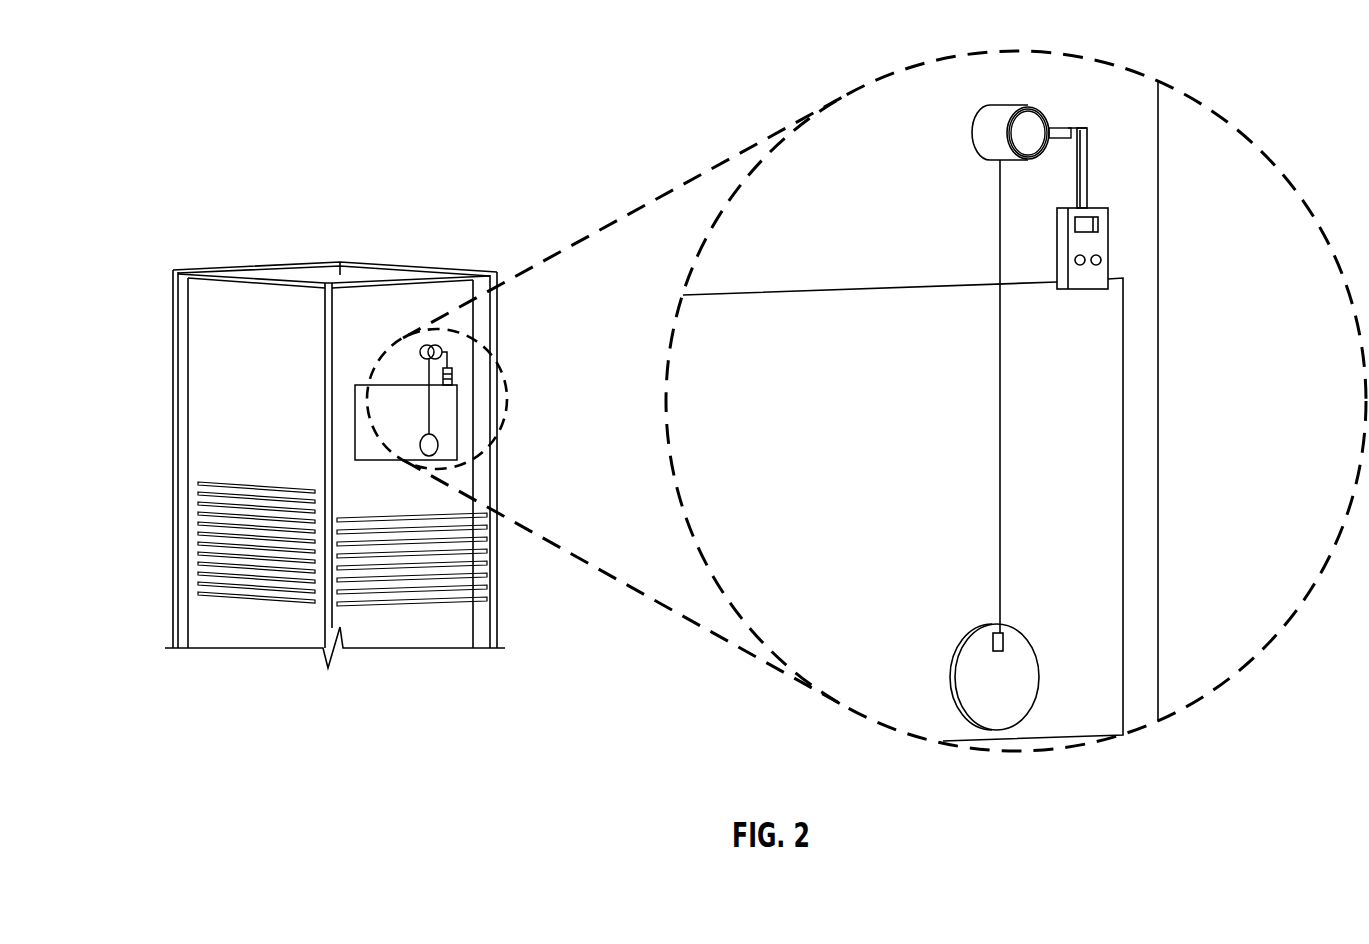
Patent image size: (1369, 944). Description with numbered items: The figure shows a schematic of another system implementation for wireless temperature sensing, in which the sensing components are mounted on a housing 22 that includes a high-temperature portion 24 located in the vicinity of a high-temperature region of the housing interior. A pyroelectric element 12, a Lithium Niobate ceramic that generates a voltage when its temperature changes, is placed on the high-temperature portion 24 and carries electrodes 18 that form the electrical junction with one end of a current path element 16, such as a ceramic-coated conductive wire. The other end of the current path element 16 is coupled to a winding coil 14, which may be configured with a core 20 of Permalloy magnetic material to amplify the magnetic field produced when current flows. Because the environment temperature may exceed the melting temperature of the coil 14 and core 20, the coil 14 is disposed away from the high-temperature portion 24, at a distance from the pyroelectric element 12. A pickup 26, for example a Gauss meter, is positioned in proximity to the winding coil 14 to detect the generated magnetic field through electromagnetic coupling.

The pyroelectric element 12 is at (1012, 691).
The winding coil 14 is at (992, 131).
The current path element 16 is at (1001, 412).
The electrodes 18 is at (1003, 642).
The core 20 is at (1022, 148).
The housing 22 is at (305, 272).
The high-temperature portion 24 is at (355, 425).
The pickup 26 is at (1120, 241).